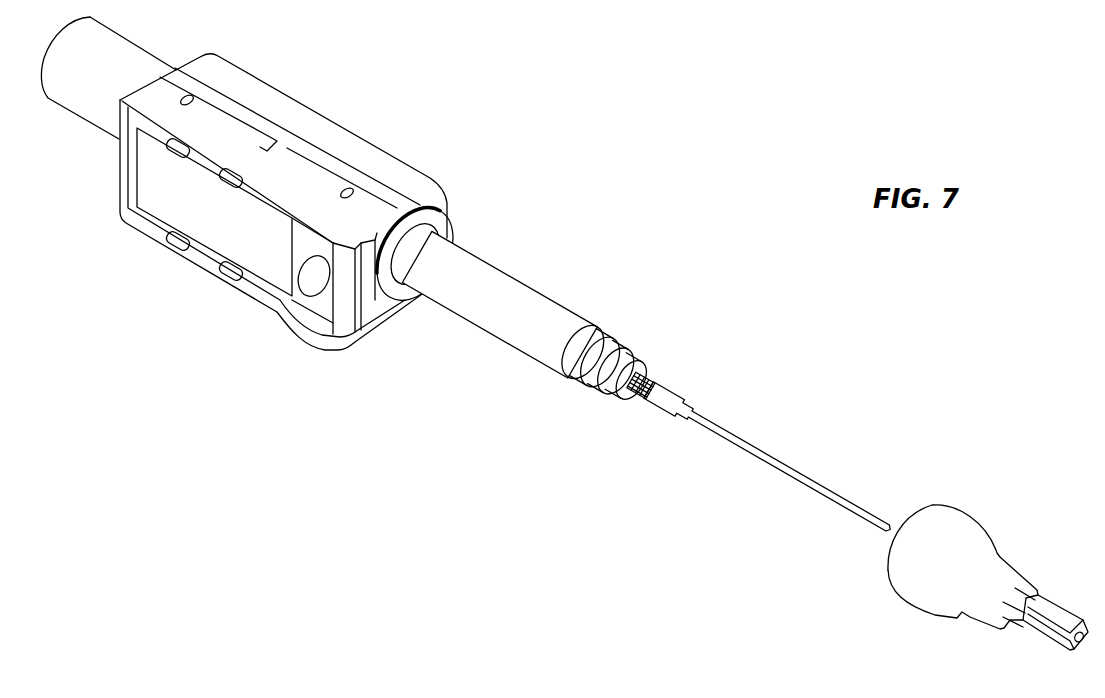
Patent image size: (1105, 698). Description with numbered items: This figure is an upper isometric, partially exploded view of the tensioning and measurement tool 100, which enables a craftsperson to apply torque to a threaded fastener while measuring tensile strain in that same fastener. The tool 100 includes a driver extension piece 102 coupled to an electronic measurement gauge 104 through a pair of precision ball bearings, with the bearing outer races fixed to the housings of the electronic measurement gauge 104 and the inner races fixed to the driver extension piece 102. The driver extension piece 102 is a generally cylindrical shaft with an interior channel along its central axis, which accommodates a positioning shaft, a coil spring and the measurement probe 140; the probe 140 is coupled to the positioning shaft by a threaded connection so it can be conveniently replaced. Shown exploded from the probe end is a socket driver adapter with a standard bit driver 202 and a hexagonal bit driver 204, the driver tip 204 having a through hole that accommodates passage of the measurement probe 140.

The tensioning and measurement tool 100 is at (663, 212).
The driver extension piece 102 is at (518, 303).
The electronic measurement gauge 104 is at (307, 178).
The measurement probe 140 is at (677, 402).
The driver tip / standard bit driver 202 is at (930, 543).
The hexagonal bit driver 204 is at (1057, 637).